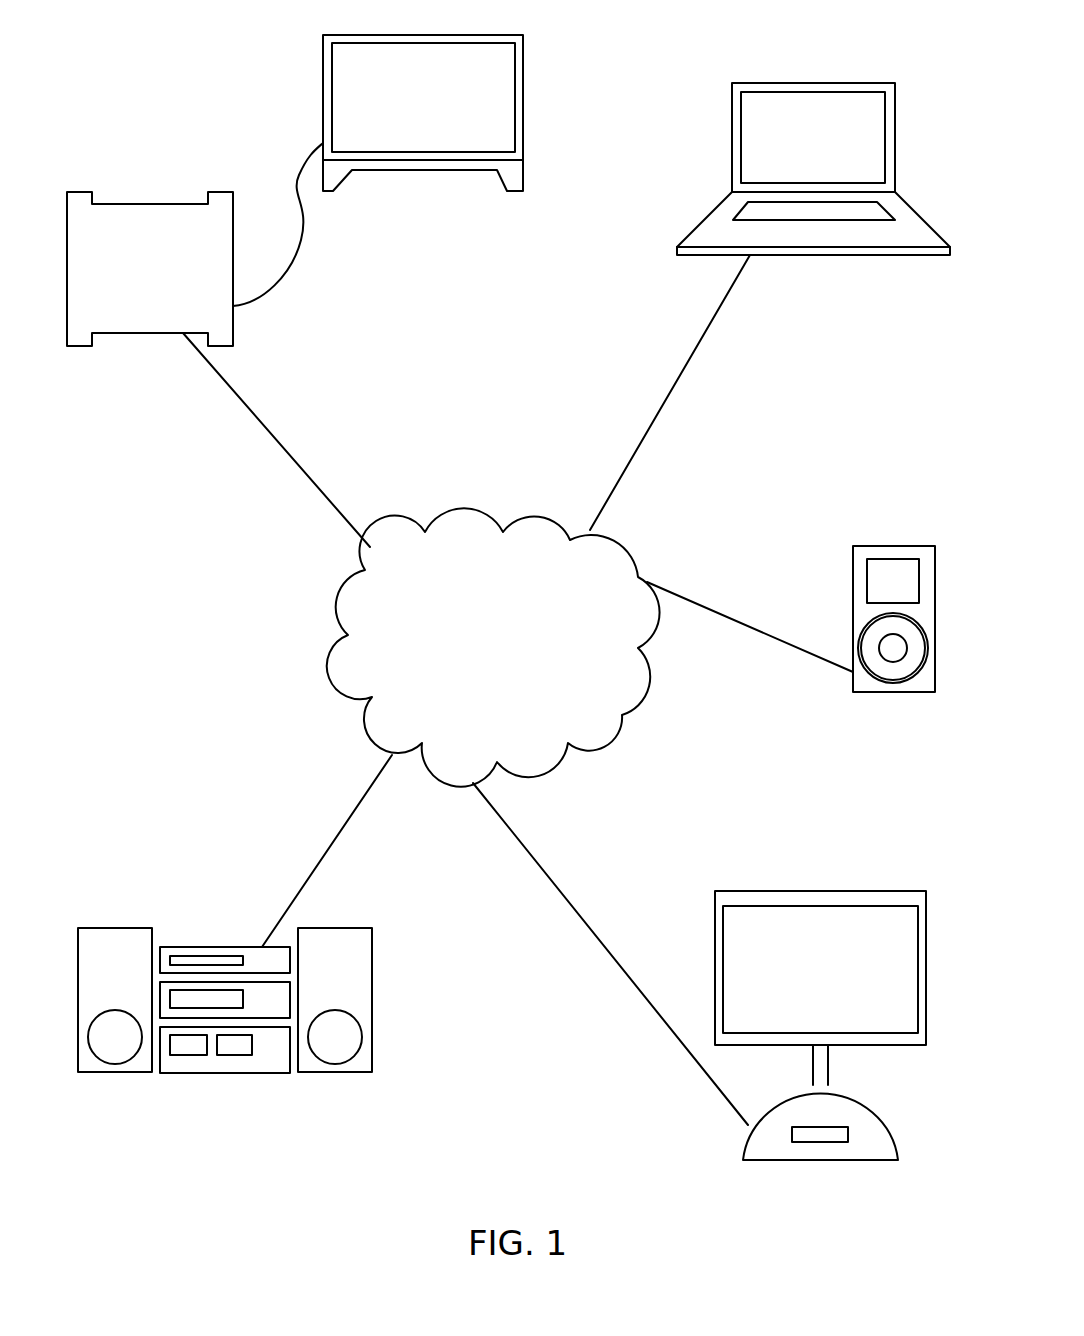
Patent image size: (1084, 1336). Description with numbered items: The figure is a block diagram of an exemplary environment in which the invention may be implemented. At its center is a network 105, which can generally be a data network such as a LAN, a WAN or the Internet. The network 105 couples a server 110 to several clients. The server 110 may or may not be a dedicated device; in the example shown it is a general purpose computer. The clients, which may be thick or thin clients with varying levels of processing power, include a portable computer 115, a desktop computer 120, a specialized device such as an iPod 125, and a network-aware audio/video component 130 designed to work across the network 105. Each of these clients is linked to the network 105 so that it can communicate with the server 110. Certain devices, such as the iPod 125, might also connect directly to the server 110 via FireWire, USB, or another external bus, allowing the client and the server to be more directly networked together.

The network 105 is at (490, 512).
The server 110 is at (232, 197).
The portable computer 115 is at (828, 82).
The desktop computer 120 is at (862, 891).
The iPod 125 is at (897, 546).
The network-aware audio/video component 130 is at (188, 947).